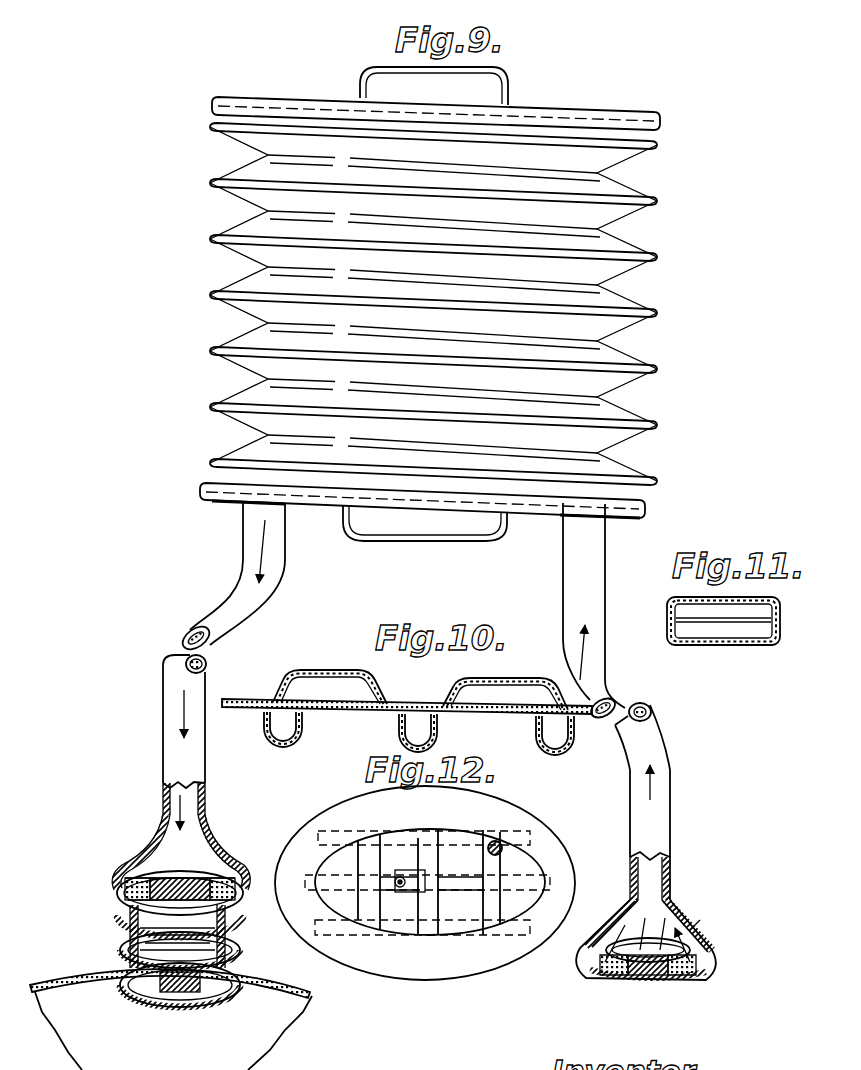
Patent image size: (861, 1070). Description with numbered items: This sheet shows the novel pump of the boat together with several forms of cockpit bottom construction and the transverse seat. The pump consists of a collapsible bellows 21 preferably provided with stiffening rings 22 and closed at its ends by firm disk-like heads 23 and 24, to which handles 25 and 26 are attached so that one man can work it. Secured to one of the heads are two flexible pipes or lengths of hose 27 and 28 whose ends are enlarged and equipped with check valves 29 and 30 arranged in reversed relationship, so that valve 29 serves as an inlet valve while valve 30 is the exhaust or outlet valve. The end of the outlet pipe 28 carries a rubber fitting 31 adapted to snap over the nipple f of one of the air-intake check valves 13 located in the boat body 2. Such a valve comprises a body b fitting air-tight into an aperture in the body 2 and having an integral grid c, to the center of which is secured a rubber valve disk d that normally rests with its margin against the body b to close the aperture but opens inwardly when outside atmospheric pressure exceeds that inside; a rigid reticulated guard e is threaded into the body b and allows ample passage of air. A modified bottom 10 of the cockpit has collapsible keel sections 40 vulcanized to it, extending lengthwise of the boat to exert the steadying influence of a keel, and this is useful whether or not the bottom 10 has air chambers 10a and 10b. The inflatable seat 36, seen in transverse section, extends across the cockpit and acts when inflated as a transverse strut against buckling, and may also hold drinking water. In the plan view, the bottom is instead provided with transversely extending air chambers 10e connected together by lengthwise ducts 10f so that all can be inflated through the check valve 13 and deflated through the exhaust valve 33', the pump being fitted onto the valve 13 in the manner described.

In FIG. 9, the boat body 2 is at (40, 982).
In FIG. 12, the boat body 2 is at (500, 817).
In FIG. 10, the bottom 10 is at (256, 699).
In FIG. 10, the air chamber 10a is at (332, 668).
In FIG. 10, the air chamber 10b is at (496, 690).
In FIG. 12, the transversely extending air chambers 10e is at (437, 915).
In FIG. 12, the lengthwise ducts 10f is at (455, 877).
In FIG. 9, the air-intake valve 13 is at (185, 1000).
In FIG. 12, the air-intake valve 13 is at (500, 868).
In FIG. 9, the collapsible bellows 21 is at (610, 247).
In FIG. 9, the stiffening rings 22 is at (633, 200).
In FIG. 9, the disk-like head 23 is at (622, 116).
In FIG. 9, the disk-like head 24 is at (640, 498).
In FIG. 9, the handle 25 is at (505, 86).
In FIG. 9, the handle 26 is at (480, 541).
In FIG. 9, the flexible pipe 27 is at (660, 758).
In FIG. 9, the outlet pipe 28 is at (170, 714).
In FIG. 9, the inlet check valve 29 is at (660, 982).
In FIG. 9, the outlet check valve 30 is at (208, 835).
In FIG. 9, the rubber fitting 31 is at (128, 912).
In FIG. 12, the exhaust valve 33' is at (405, 840).
In FIG. 11, the inflatable seat 36 is at (764, 647).
In FIG. 10, the collapsible keel sections 40 is at (548, 735).
In FIG. 12, the collapsible keel sections 40 is at (517, 937).
In FIG. 9, the valve body b is at (235, 975).
In FIG. 9, the grid c is at (230, 940).
In FIG. 9, the valve disk d is at (143, 1000).
In FIG. 9, the guard e is at (210, 1000).
In FIG. 9, the nipple f is at (130, 945).